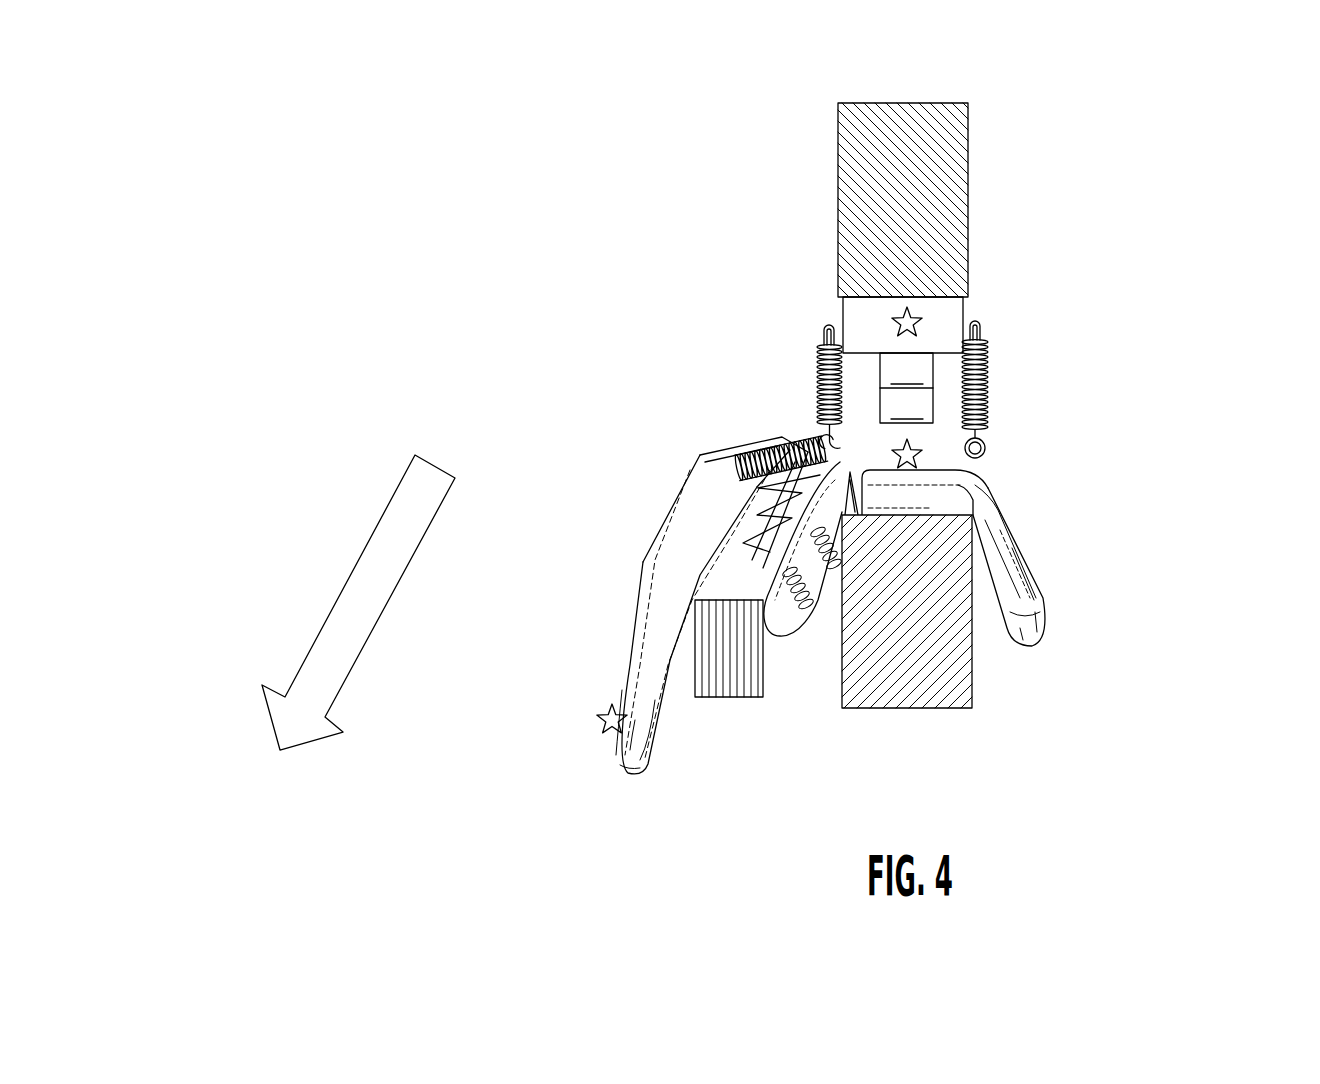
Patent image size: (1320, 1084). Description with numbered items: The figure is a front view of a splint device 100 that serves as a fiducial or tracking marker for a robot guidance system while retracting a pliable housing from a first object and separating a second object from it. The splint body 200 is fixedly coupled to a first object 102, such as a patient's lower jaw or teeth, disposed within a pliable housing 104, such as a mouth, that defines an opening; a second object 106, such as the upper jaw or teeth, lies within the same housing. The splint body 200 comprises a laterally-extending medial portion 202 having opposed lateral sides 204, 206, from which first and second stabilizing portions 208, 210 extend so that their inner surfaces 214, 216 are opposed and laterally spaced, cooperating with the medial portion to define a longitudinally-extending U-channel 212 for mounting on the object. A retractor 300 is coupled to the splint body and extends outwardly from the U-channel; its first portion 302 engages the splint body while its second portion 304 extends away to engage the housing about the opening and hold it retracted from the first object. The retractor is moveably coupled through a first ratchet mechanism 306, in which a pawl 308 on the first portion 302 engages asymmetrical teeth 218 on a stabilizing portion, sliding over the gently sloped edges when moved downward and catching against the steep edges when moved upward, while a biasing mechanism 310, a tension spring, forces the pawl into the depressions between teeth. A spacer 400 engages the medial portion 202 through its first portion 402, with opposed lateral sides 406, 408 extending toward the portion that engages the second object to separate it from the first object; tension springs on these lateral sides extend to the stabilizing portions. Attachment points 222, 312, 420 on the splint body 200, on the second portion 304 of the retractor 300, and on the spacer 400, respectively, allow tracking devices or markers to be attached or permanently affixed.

The splint device 100 is at (1207, 386).
The first object 102 is at (975, 697).
The pliable housing 104 is at (728, 698).
The second object 106 is at (968, 135).
The splint body 200 is at (1157, 476).
The laterally-extending medial portion 202 is at (973, 490).
The lateral side 204 is at (987, 470).
The lateral side 206 is at (873, 462).
The first stabilizing portion 208 is at (1036, 548).
The second stabilizing portion 210 is at (765, 590).
The longitudinally-extending U-channel 212 is at (1000, 665).
The inner surface 214 is at (1025, 597).
The inner surface 216 is at (785, 603).
The teeth 218 is at (760, 548).
The attachment point 222 is at (947, 418).
The retractor 300 is at (680, 590).
The first portion 302 is at (680, 514).
The second portion 304 is at (638, 685).
The first ratchet mechanism 306 is at (724, 568).
The pawl 308 is at (703, 456).
The biasing mechanism 310 is at (735, 460).
The attachment point 312 is at (925, 452).
The spacer 400 is at (1078, 291).
The first portion 402 is at (880, 355).
The lateral side 406 is at (978, 323).
The lateral side 408 is at (825, 333).
The attachment point 420 is at (896, 312).